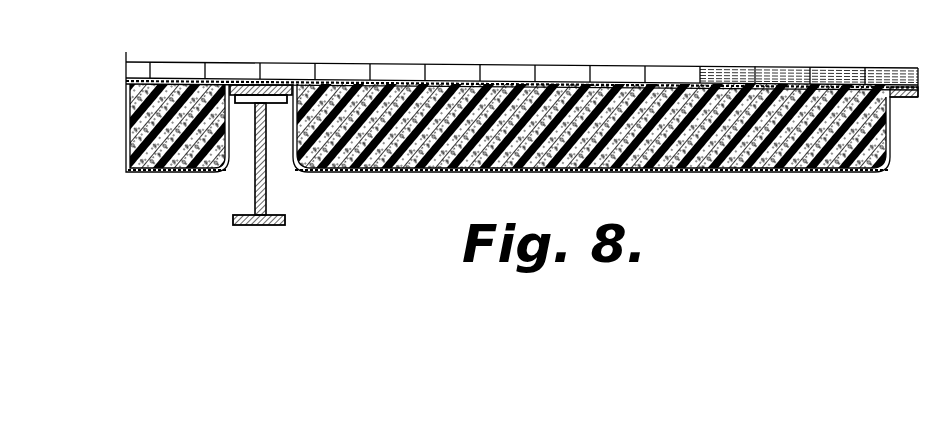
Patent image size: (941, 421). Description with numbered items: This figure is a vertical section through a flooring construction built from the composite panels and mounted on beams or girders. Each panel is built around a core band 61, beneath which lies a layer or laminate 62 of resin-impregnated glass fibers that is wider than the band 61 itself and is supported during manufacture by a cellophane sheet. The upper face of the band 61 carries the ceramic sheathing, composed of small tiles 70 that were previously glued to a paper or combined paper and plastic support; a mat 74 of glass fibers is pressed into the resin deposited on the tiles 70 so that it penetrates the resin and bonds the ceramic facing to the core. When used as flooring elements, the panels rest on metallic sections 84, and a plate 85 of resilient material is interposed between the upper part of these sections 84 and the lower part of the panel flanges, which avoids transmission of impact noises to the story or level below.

The band 61 is at (150, 114).
The layer or laminate of glass fibers 62 is at (383, 170).
The tiles 70 is at (716, 72).
The mat of glass fibers 74 is at (492, 81).
The metallic sections 84 is at (258, 183).
The plate of resilient material 85 is at (263, 83).